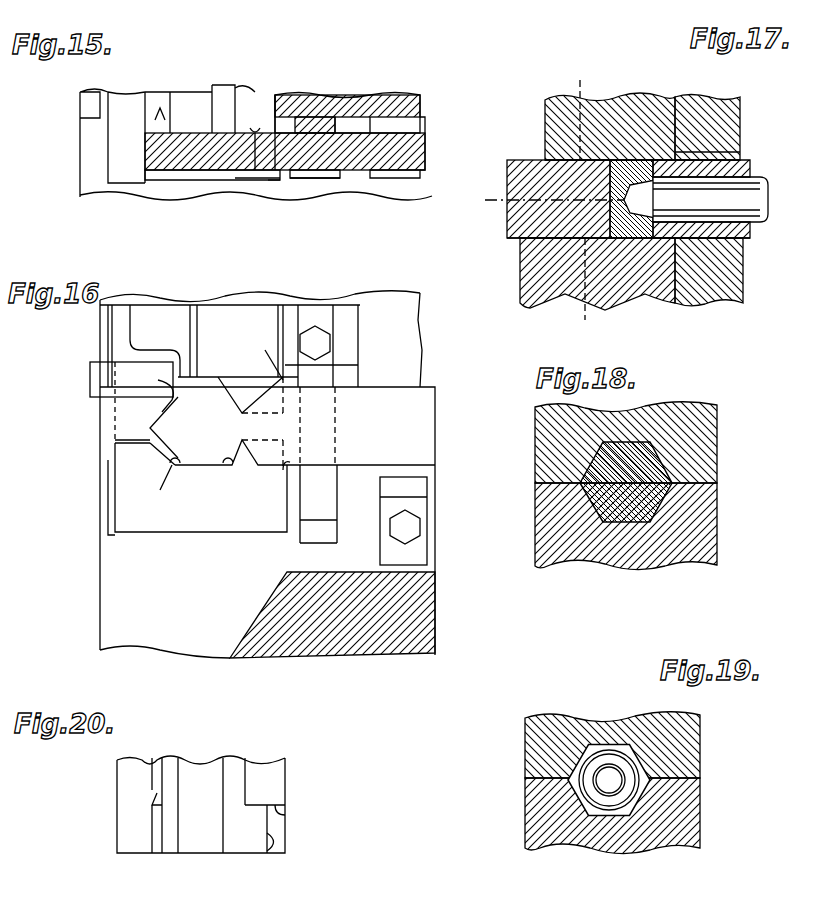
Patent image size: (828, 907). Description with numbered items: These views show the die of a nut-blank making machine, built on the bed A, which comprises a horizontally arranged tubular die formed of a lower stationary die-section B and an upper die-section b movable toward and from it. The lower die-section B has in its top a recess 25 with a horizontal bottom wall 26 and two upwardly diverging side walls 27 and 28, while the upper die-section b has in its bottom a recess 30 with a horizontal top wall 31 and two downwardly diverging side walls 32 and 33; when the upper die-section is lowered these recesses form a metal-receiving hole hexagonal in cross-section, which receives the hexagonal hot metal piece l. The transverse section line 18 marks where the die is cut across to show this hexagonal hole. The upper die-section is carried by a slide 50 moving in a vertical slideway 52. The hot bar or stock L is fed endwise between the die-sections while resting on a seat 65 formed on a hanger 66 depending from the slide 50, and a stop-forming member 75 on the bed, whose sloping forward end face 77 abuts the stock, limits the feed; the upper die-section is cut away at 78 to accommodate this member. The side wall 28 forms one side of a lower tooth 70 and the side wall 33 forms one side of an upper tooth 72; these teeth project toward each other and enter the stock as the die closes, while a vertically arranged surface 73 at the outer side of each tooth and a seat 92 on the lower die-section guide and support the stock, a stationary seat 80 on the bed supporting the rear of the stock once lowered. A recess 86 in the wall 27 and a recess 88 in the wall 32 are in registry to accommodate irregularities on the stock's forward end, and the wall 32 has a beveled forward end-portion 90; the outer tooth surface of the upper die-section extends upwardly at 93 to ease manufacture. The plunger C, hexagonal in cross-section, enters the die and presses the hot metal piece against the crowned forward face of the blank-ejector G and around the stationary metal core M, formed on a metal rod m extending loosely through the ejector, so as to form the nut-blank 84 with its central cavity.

In FIG. 15, the recess 25 is at (240, 90).
In FIG. 16, the recess 25 is at (173, 468).
In FIG. 18, the recess 25 is at (572, 565).
In FIG. 19, the recess 25 is at (582, 822).
In FIG. 20, the recess 25 is at (150, 762).
In FIG. 15, the bottom wall 26 is at (190, 100).
In FIG. 16, the bottom wall 26 is at (190, 470).
In FIG. 20, the bottom wall 26 is at (200, 845).
In FIG. 15, the side wall 27 is at (158, 100).
In FIG. 16, the side wall 27 is at (163, 510).
In FIG. 20, the side wall 27 is at (167, 785).
In FIG. 15, the side wall 28 is at (222, 90).
In FIG. 16, the side wall 28 is at (240, 470).
In FIG. 20, the side wall 28 is at (240, 770).
In FIG. 16, the recess 30 is at (225, 382).
In FIG. 18, the recess 30 is at (648, 442).
In FIG. 19, the recess 30 is at (590, 744).
In FIG. 16, the top wall 31 is at (215, 372).
In FIG. 16, the side wall 32 is at (172, 350).
In FIG. 16, the side wall 33 is at (232, 400).
In FIG. 16, the slide 50 is at (275, 300).
In FIG. 16, the slideway 52 is at (358, 372).
In FIG. 15, the seat 65 is at (330, 178).
In FIG. 16, the seat 65 is at (338, 530).
In FIG. 15, the hanger 66 is at (350, 120).
In FIG. 16, the hanger 66 is at (327, 490).
In FIG. 15, the tooth 70 is at (272, 183).
In FIG. 16, the tooth 70 is at (250, 470).
In FIG. 20, the tooth 70 is at (273, 850).
In FIG. 16, the tooth 72 is at (240, 395).
In FIG. 19, the tooth 72 is at (489, 890).
In FIG. 15, the vertically arranged surface 73 is at (256, 132).
In FIG. 16, the vertically arranged surface 73 is at (283, 385).
In FIG. 20, the vertically arranged surface 73 is at (287, 817).
In FIG. 16, the stop-forming member 75 is at (100, 380).
In FIG. 16, the forward end face 77 is at (130, 305).
In FIG. 16, the recess 78 is at (205, 305).
In FIG. 17, the recess 78 is at (550, 105).
In FIG. 15, the stationary seat 80 is at (398, 123).
In FIG. 16, the stationary seat 80 is at (428, 490).
In FIG. 17, the nut-blank 84 is at (636, 165).
In FIG. 16, the recess 86 is at (160, 455).
In FIG. 20, the recess 86 is at (150, 840).
In FIG. 16, the recess 88 is at (150, 400).
In FIG. 16, the beveled forward end-portion 90 is at (165, 395).
In FIG. 15, the seat 92 is at (248, 178).
In FIG. 16, the seat 92 is at (286, 470).
In FIG. 20, the seat 92 is at (277, 830).
In FIG. 16, the extended surface 93 is at (270, 305).
In FIG. 17, the center line 18 is at (589, 197).
In FIG. 15, the bed A is at (85, 192).
In FIG. 16, the bed A is at (106, 624).
In FIG. 15, the lower stationary die-section B is at (118, 92).
In FIG. 16, the lower stationary die-section B is at (125, 528).
In FIG. 17, the lower stationary die-section B is at (565, 295).
In FIG. 18, the lower stationary die-section B is at (610, 565).
In FIG. 19, the lower stationary die-section B is at (578, 852).
In FIG. 20, the lower stationary die-section B is at (286, 776).
In FIG. 17, the plunger C is at (520, 200).
In FIG. 18, the plunger C is at (650, 498).
In FIG. 16, the blank-ejector G is at (180, 470).
In FIG. 17, the blank-ejector G is at (748, 240).
In FIG. 19, the blank-ejector G is at (645, 766).
In FIG. 15, the hot bar or stock L is at (425, 133).
In FIG. 16, the hot bar or stock L is at (413, 420).
In FIG. 17, the stationary metal core M is at (644, 212).
In FIG. 19, the stationary metal core M is at (618, 790).
In FIG. 17, the metal rod m is at (752, 180).
In FIG. 16, the upper movable die-section b is at (218, 318).
In FIG. 17, the upper movable die-section b is at (612, 110).
In FIG. 18, the upper movable die-section b is at (700, 425).
In FIG. 19, the upper movable die-section b is at (530, 722).
In FIG. 15, the hexagonal hot metal piece l is at (200, 160).